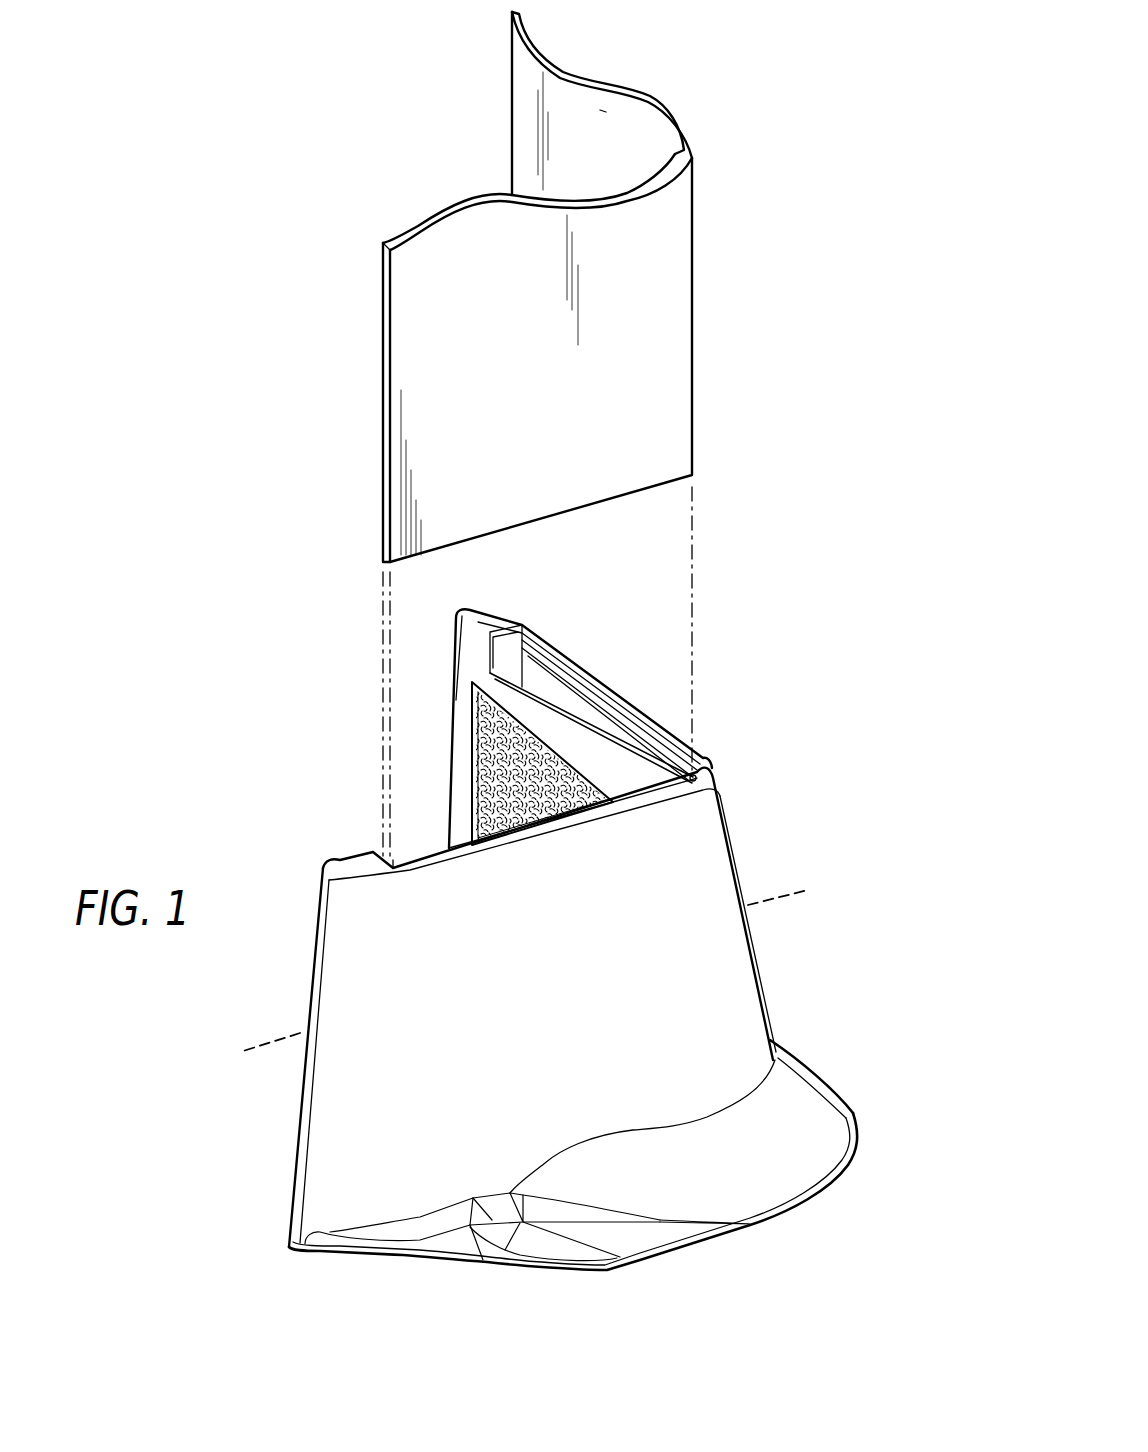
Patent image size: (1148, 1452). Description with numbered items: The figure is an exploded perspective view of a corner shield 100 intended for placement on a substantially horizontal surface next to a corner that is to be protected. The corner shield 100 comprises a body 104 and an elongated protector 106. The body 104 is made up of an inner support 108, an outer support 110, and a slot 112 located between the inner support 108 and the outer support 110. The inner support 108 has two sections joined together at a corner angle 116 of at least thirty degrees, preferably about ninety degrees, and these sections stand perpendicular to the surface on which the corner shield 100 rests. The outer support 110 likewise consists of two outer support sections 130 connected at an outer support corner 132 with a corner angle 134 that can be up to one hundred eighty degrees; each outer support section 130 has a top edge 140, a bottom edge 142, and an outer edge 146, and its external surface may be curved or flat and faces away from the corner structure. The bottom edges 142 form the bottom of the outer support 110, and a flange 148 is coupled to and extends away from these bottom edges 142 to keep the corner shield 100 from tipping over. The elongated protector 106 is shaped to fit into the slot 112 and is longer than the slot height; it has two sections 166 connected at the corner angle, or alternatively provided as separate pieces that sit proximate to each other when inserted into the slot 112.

The corner shield 100 is at (826, 140).
The body 104 is at (843, 849).
The elongated protector 106 is at (703, 304).
The inner support 108 is at (474, 652).
The outer support 110 is at (387, 1044).
The slot 112 is at (562, 810).
The corner angle 116 is at (495, 758).
The outer support sections 130 is at (619, 697).
The outer support corner 132 is at (746, 877).
The corner angle 134 is at (697, 1033).
The top edge 140 is at (675, 745).
The bottom edge 142 is at (375, 1264).
The outer edge 146 is at (338, 963).
The flange 148 is at (817, 1140).
The protector sections 166 is at (606, 118).